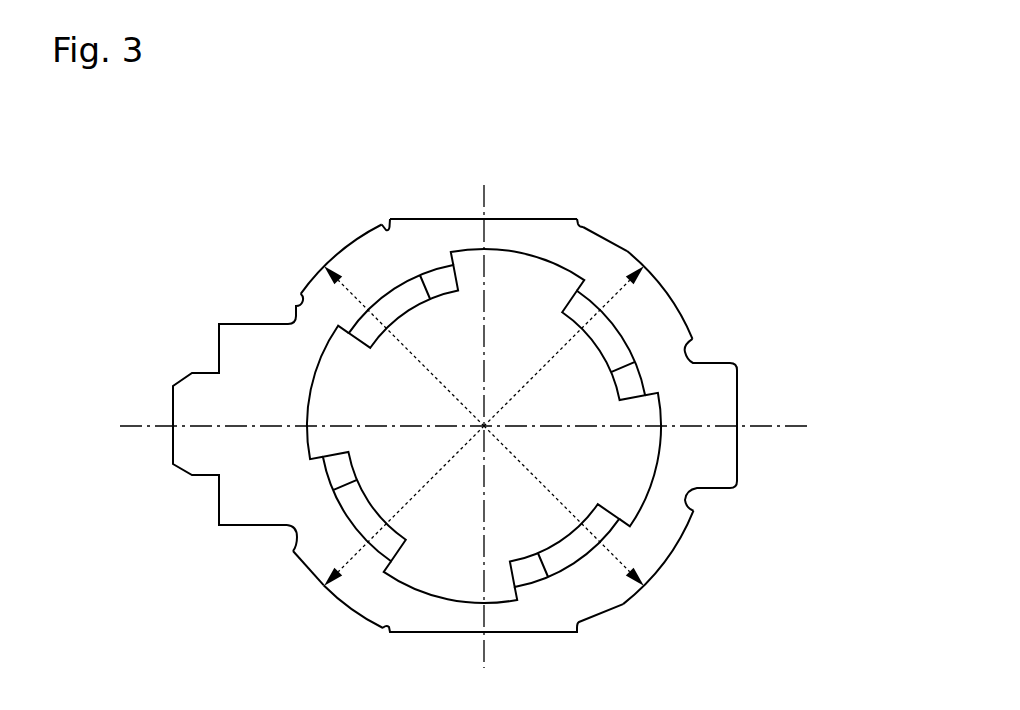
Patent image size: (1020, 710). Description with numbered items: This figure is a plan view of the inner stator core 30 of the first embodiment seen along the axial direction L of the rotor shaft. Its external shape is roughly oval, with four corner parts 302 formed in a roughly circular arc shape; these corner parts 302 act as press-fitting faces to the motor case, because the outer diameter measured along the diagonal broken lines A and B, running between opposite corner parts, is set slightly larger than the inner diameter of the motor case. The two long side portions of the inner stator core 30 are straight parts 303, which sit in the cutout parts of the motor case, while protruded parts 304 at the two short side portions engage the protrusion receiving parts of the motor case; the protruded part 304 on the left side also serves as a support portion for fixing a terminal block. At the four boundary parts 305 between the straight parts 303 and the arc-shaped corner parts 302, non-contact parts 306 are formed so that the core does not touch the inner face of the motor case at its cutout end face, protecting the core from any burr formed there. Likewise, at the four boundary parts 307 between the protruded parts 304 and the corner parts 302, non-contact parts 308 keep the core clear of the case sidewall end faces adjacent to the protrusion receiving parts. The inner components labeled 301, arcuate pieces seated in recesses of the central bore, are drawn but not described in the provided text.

The inner stator core 30 is at (679, 98).
The magnets 301 is at (413, 290).
The corner parts 302 is at (660, 278).
The straight parts 303 is at (522, 218).
The protruded parts 304 is at (717, 397).
The boundary parts 305 is at (579, 219).
The non-contact parts 306 is at (588, 224).
The boundary parts 307 is at (293, 551).
The non-contact parts 308 is at (287, 536).
The outer diameter dimension A is at (623, 293).
The outer diameter dimension B is at (622, 552).
The axial direction L is at (482, 424).